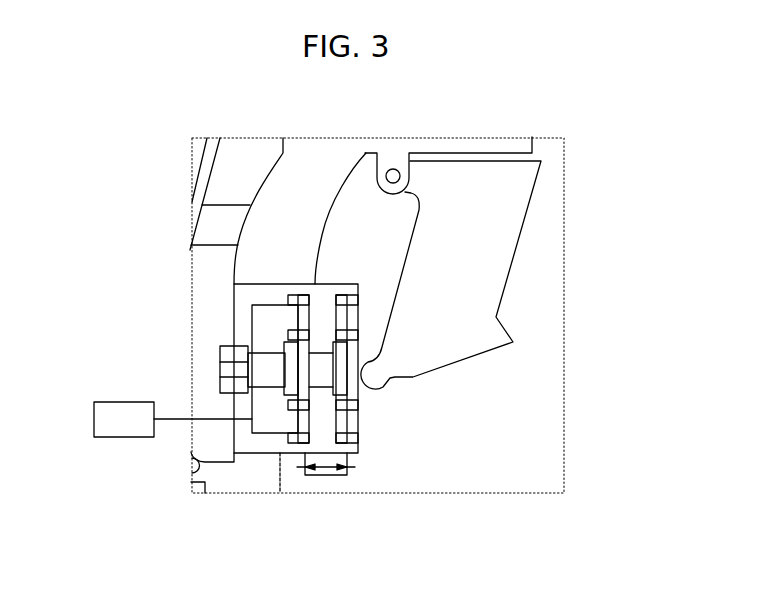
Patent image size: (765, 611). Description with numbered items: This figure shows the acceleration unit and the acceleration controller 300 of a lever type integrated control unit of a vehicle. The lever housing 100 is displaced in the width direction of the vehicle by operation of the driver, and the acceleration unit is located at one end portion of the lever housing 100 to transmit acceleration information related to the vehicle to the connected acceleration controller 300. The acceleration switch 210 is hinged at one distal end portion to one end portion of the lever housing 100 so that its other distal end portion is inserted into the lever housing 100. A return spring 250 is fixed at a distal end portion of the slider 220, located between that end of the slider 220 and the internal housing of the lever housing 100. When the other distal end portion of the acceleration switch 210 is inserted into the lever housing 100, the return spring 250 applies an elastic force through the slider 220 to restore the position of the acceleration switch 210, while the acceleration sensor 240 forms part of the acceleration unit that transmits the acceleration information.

The lever housing 100 is at (300, 193).
The acceleration switch 210 is at (483, 257).
The slider 220 is at (360, 425).
The acceleration sensor 240 is at (272, 422).
The return spring 250 is at (258, 358).
The acceleration controller 300 is at (122, 402).